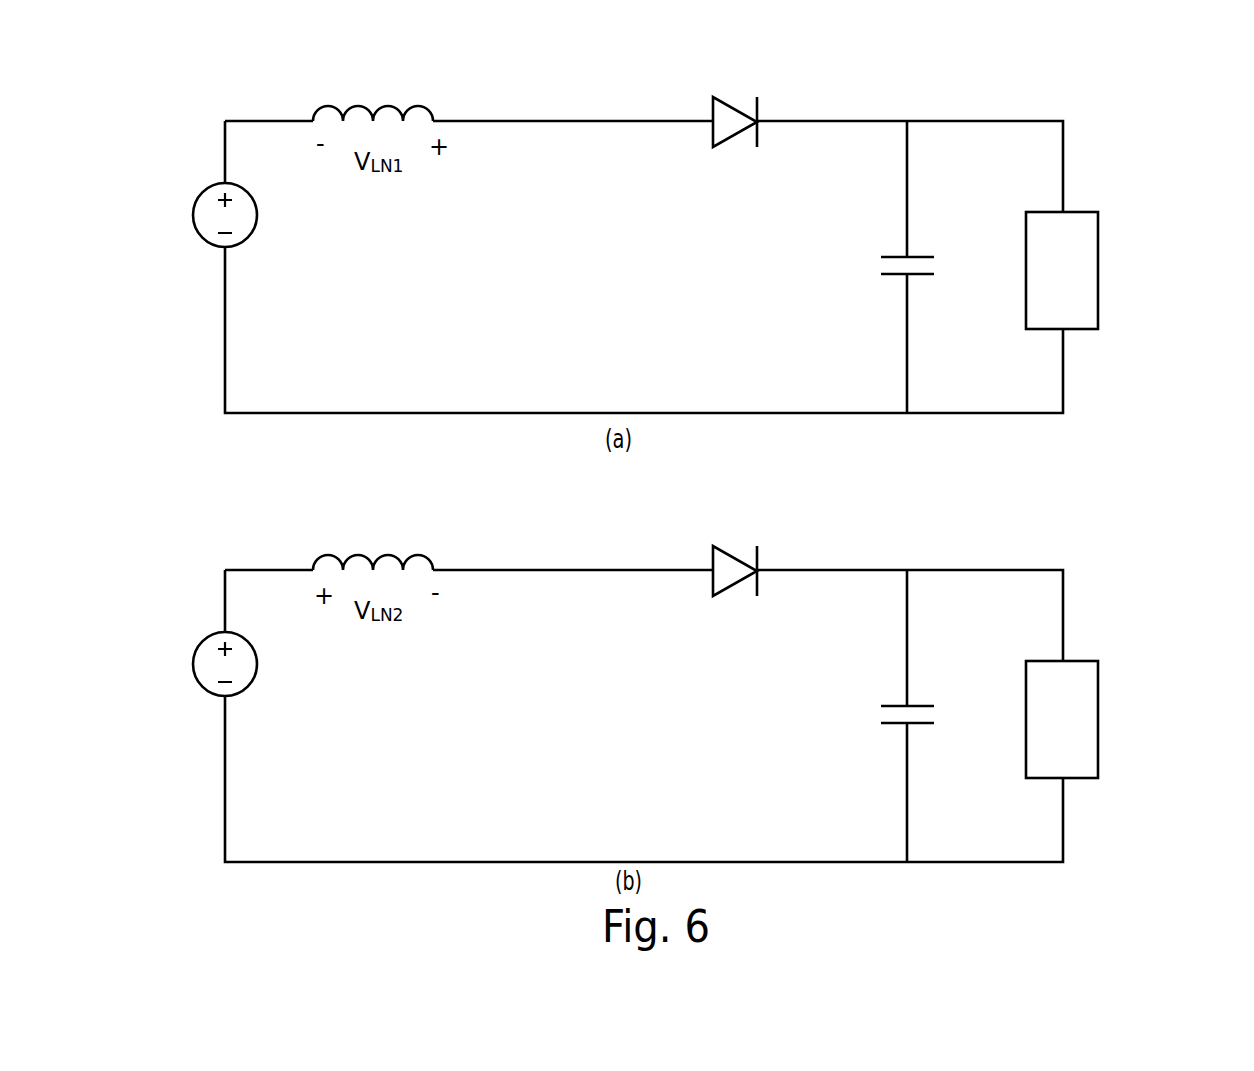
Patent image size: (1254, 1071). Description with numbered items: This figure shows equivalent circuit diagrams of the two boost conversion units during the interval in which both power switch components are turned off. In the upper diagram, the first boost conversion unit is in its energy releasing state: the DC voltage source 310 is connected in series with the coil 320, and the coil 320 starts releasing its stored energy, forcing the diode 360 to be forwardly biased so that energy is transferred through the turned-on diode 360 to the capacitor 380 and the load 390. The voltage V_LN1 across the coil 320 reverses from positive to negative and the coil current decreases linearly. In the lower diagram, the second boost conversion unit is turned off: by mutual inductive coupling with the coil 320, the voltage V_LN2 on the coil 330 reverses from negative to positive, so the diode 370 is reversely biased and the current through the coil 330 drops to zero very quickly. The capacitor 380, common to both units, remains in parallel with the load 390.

The DC voltage source 310 is at (208, 185).
The coil 320 is at (393, 101).
The coil 330 is at (393, 550).
The diode 360 is at (734, 106).
The diode 370 is at (734, 555).
The capacitor 380 is at (890, 277).
The load 390 is at (1100, 233).